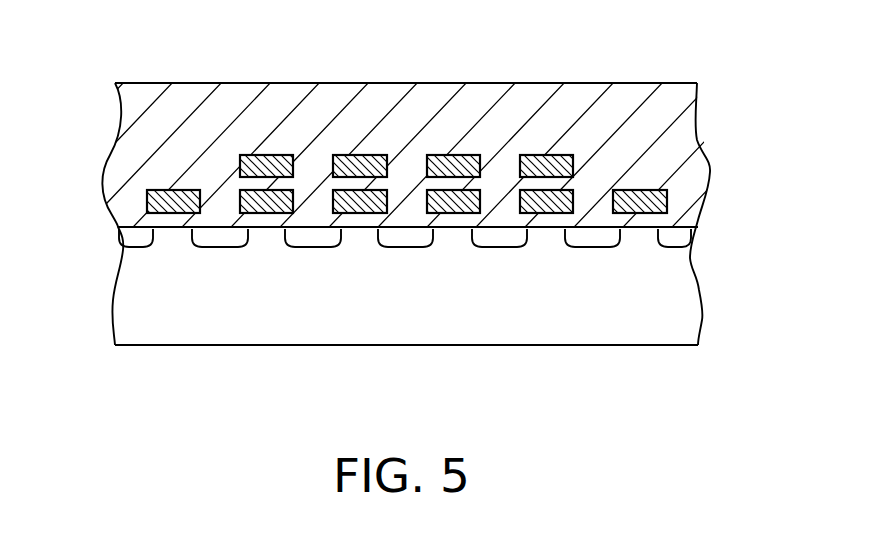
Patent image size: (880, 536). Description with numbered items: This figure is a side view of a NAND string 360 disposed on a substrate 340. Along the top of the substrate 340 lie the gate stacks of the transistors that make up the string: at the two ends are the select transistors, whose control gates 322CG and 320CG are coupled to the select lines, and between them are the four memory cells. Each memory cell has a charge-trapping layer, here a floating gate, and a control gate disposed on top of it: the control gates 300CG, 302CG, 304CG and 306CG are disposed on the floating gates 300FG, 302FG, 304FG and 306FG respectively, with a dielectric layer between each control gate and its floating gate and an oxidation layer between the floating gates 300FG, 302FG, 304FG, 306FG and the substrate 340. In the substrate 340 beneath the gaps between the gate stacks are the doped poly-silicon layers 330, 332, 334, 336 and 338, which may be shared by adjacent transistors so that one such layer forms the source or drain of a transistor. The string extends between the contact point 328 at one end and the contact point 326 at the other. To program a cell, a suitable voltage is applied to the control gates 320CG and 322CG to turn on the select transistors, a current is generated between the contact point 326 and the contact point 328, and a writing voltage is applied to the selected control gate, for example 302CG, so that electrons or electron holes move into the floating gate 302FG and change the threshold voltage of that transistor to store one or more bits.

The control gate 322CG is at (172, 192).
The control gate 306CG is at (272, 157).
The control gate 304CG is at (363, 157).
The control gate 302CG is at (455, 157).
The control gate 300CG is at (548, 157).
The control gate 320CG is at (647, 192).
The floating gate 306FG is at (268, 205).
The floating gate 304FG is at (362, 205).
The floating gate 302FG is at (455, 205).
The floating gate 300FG is at (548, 205).
The contact point 328 is at (137, 235).
The doped poly-silicon layer 330 is at (217, 238).
The doped poly-silicon layer 332 is at (309, 238).
The doped poly-silicon layer 334 is at (402, 238).
The doped poly-silicon layer 336 is at (497, 238).
The doped poly-silicon layer 338 is at (590, 238).
The contact point 326 is at (677, 237).
The substrate 340 is at (667, 303).
The NAND string 360 is at (440, 220).